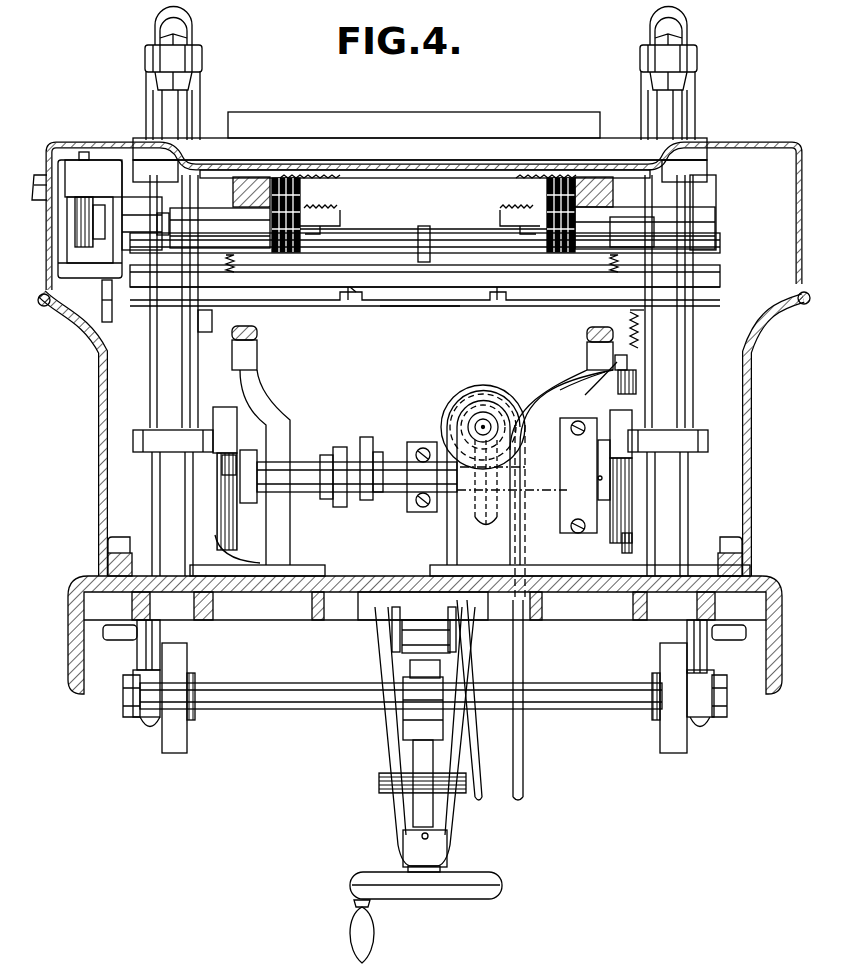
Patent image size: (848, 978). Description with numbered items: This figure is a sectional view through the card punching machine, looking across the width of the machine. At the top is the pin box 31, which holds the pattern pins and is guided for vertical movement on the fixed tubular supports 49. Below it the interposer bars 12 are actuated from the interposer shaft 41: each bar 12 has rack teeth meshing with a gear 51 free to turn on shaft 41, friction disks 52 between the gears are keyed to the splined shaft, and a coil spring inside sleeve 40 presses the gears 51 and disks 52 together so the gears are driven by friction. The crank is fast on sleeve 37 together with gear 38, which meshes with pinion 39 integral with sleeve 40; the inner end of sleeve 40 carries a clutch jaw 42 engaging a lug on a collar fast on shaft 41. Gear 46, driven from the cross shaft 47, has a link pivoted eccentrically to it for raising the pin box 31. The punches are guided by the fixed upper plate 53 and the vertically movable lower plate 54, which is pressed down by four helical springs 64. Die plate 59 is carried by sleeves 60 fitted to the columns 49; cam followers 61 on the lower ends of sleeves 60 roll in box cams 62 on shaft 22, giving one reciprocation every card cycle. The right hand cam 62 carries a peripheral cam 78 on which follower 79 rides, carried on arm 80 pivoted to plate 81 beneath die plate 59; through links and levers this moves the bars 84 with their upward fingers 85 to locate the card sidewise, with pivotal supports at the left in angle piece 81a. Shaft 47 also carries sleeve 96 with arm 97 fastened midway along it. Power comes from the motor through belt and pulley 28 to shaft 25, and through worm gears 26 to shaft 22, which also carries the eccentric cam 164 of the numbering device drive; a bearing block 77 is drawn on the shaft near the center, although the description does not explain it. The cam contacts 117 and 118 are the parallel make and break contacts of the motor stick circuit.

The interposer bar 12 is at (302, 195).
The shaft 22 is at (548, 490).
The shaft 25 is at (489, 418).
The worm gears 26 is at (486, 528).
The belt and pulley 28 is at (512, 440).
The pin box 31 is at (440, 120).
The sleeve 37 is at (42, 175).
The gear 38 is at (88, 152).
The pinion 39 is at (84, 205).
The sleeve 40 is at (110, 215).
The interposer shaft 41 is at (338, 216).
The clutch jaw 42 is at (158, 222).
The gear 46 is at (106, 322).
The shaft 47 is at (462, 245).
The tubular supports 49 is at (200, 94).
The gear 51 is at (262, 300).
The friction disk 52 is at (220, 212).
The upper plate 53 is at (406, 172).
The lower plate 54 is at (420, 300).
The die plate 59 is at (556, 300).
The sleeve 60 is at (158, 372).
The cam follower 61 is at (218, 420).
The box cam 62 is at (268, 407).
The helical spring 64 is at (236, 264).
The bearing block 77 is at (400, 455).
The cam 78 is at (630, 528).
The cam follower 79 is at (636, 382).
The arm 80 is at (612, 370).
The plate 81 is at (640, 348).
The angle piece 81a is at (204, 330).
The bar 84 is at (362, 300).
The finger 85 is at (360, 288).
The sleeve 96 is at (372, 238).
The arm 97 is at (426, 228).
The cam contact 117 is at (340, 508).
The cam contact 118 is at (366, 500).
The eccentric cam 164 is at (572, 470).